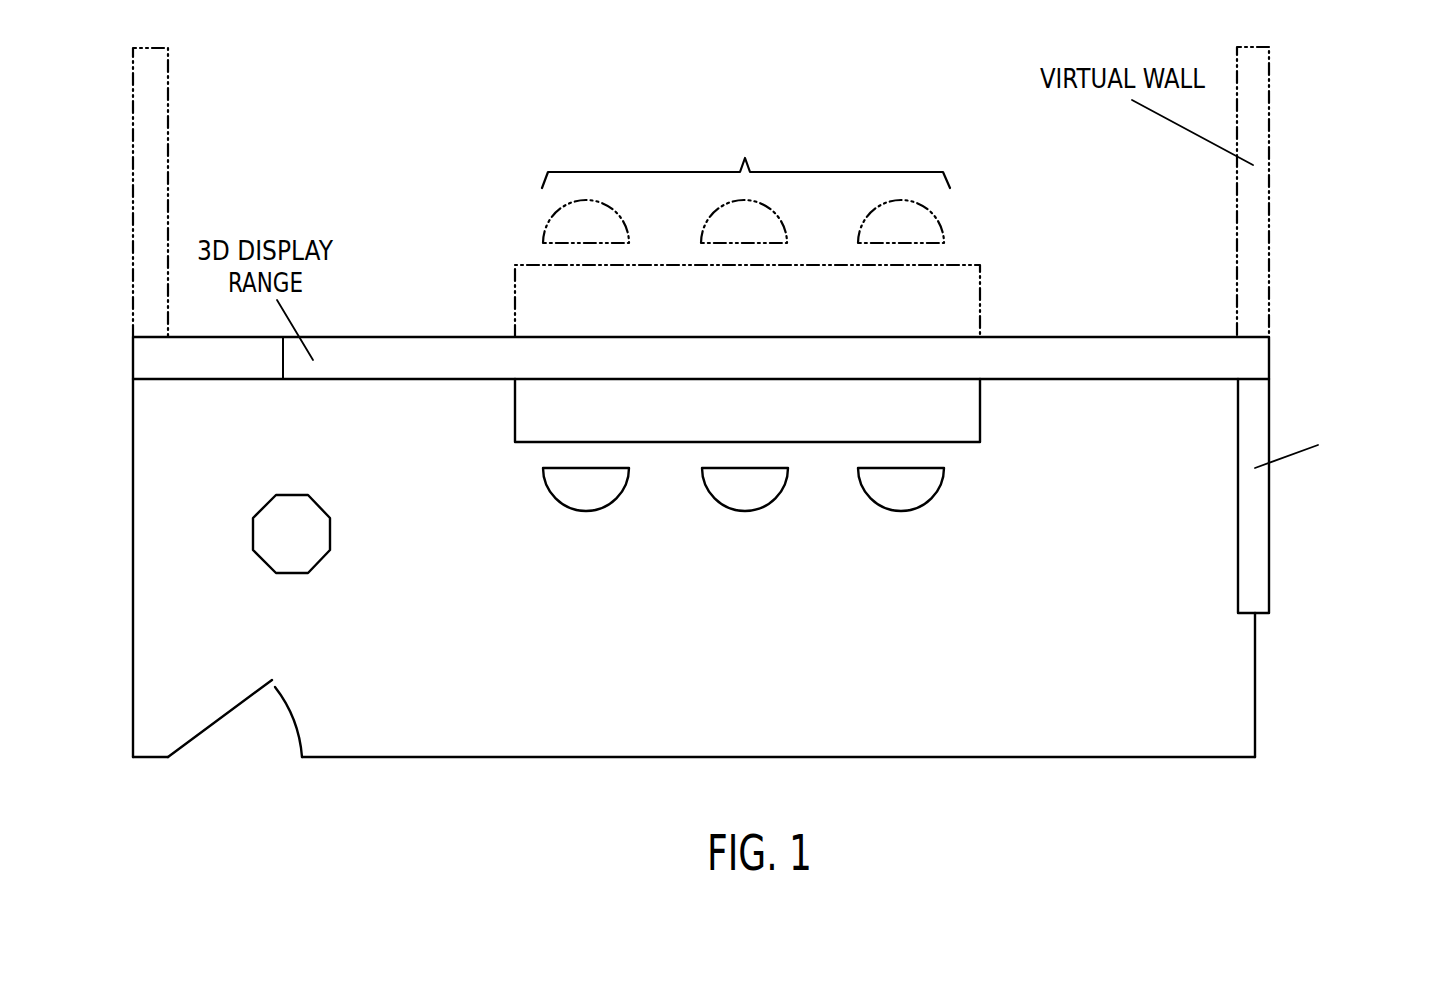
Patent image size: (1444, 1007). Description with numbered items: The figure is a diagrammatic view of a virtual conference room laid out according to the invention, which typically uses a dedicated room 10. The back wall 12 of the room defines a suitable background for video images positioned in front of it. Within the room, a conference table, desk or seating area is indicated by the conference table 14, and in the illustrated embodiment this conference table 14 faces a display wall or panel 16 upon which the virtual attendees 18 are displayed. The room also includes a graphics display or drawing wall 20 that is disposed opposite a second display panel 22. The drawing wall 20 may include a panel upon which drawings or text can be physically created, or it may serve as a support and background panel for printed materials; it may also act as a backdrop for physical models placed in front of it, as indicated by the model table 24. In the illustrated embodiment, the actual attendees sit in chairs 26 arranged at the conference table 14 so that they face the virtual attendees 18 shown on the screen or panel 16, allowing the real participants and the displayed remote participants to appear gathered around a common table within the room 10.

The dedicated room 10 is at (1255, 690).
The back wall 12 is at (755, 748).
The conference table 14 is at (960, 403).
The display wall or panel 16 is at (1253, 358).
The virtual attendees 18 is at (957, 253).
The graphics display or drawing wall 20 is at (133, 522).
The second display panel 22 is at (1258, 542).
The model table 24 is at (315, 527).
The chairs 26 is at (592, 495).